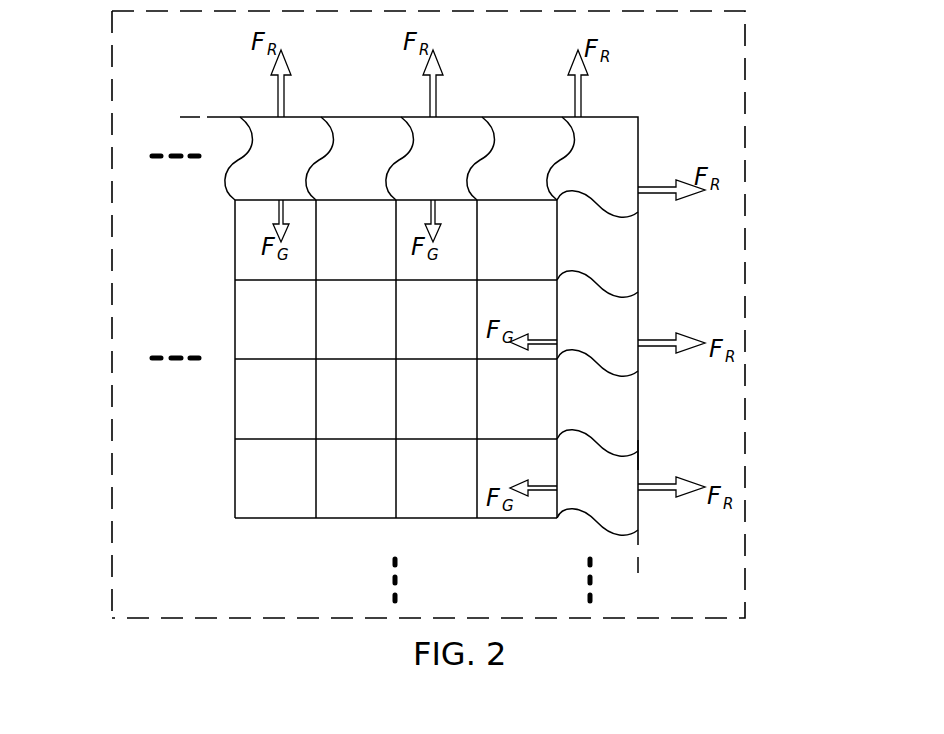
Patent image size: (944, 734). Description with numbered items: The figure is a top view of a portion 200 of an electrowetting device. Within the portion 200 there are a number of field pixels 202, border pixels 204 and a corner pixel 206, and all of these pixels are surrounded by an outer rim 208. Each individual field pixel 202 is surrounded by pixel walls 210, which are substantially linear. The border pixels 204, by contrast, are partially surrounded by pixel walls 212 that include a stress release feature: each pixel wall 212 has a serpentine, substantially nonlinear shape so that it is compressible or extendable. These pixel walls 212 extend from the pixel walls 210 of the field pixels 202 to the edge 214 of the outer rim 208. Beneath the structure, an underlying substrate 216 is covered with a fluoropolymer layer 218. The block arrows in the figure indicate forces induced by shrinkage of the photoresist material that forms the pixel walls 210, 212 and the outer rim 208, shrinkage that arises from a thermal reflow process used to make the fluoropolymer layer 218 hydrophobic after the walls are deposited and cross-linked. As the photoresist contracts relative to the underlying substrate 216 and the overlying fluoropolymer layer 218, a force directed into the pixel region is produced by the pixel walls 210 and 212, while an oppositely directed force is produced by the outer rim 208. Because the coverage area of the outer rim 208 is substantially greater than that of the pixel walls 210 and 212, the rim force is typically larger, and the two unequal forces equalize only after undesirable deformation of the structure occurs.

The portion 200 is at (762, 118).
The field pixel 202 is at (376, 331).
The border pixel 204 is at (526, 183).
The corner pixel 206 is at (624, 183).
The outer rim 208 is at (544, 103).
The pixel wall 210 is at (470, 404).
The pixel wall 212 is at (611, 452).
The edge 214 is at (638, 462).
The underlying substrate 216 is at (112, 585).
The fluoropolymer layer 218 is at (252, 586).